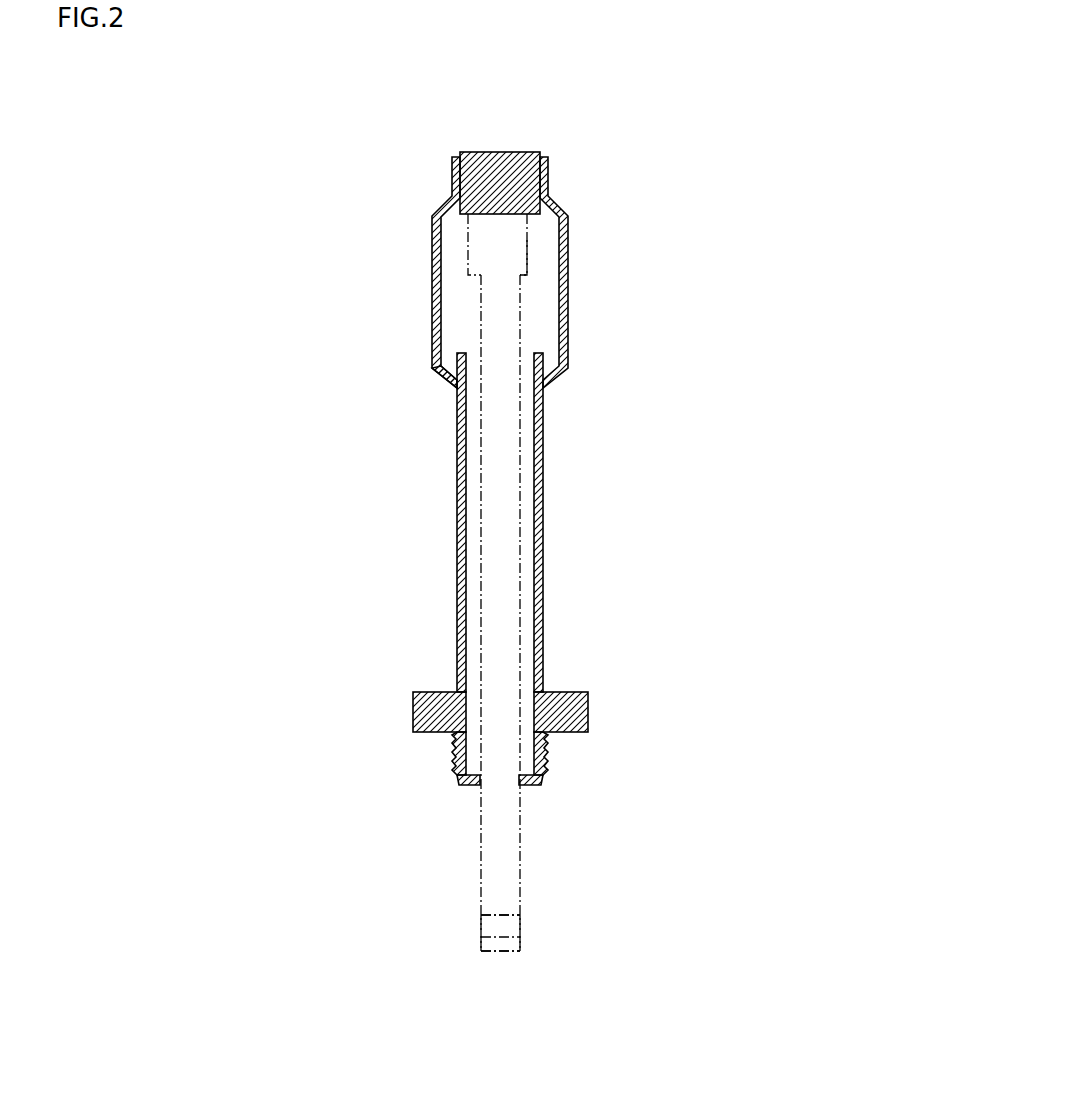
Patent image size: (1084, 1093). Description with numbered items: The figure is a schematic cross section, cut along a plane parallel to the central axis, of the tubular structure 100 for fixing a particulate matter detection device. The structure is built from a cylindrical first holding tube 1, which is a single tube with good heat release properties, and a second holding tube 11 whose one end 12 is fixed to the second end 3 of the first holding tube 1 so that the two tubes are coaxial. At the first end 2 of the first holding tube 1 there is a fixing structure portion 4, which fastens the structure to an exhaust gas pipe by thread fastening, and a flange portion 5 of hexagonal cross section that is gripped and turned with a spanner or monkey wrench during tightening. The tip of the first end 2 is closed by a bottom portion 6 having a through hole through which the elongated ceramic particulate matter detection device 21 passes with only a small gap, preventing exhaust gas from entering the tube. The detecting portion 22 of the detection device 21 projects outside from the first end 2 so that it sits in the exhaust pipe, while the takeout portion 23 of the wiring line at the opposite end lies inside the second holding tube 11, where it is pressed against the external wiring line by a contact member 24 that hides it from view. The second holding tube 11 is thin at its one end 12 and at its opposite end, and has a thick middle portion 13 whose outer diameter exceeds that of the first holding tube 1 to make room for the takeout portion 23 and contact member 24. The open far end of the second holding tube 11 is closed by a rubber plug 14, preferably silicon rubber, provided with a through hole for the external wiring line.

The tubular structure 100 is at (935, 55).
The first holding tube 1 is at (577, 583).
The first end 2 is at (509, 576).
The second end 3 is at (543, 398).
The fixing structure portion 4 is at (548, 757).
The flange portion 5 is at (588, 703).
The bottom portion 6 is at (540, 804).
The second holding tube 11 is at (580, 346).
The one end 12 is at (455, 385).
The middle portion 13 is at (424, 214).
The plug 14 is at (504, 152).
The particulate matter detection device 21 is at (541, 872).
The detecting portion 22 is at (480, 929).
The takeout portion 23 is at (522, 237).
The contact member 24 is at (525, 265).